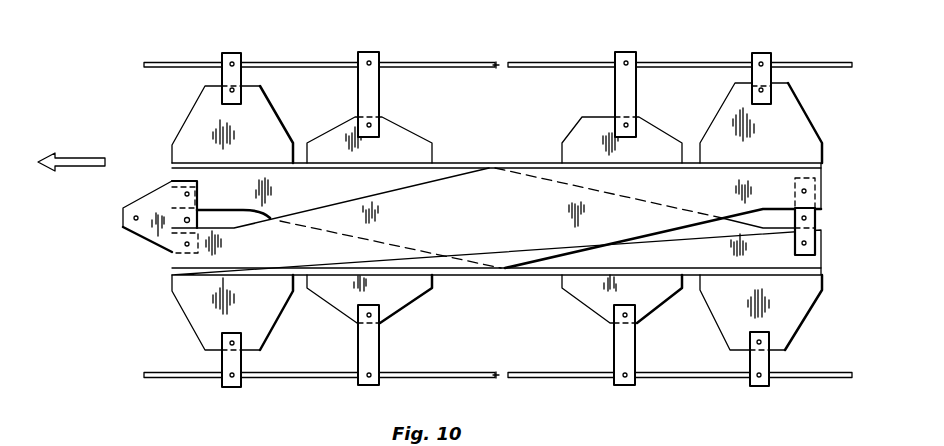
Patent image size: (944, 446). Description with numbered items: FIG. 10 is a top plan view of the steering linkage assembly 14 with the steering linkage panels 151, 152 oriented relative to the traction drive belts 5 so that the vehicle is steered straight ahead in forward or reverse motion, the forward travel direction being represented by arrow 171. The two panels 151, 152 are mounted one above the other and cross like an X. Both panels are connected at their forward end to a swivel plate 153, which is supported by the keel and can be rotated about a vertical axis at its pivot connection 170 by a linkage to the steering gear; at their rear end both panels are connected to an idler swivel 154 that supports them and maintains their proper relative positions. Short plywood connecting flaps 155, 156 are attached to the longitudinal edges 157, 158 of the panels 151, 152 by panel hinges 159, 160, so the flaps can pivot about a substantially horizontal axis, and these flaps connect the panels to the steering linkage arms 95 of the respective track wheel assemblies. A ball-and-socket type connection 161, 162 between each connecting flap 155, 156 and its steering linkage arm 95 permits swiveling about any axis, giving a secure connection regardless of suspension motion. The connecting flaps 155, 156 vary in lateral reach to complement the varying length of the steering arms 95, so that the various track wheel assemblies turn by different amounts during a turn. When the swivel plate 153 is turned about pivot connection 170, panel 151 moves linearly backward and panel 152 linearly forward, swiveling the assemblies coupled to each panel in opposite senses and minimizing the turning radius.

The traction drive belt 5 is at (461, 62).
The carriage assembly 14 is at (157, 104).
The steering linkage arm 95 is at (247, 72).
The steering linkage panel 151 is at (172, 167).
The steering linkage panel 152 is at (172, 262).
The swivel plate 153 is at (137, 202).
The idler swivel 154 is at (817, 218).
The connecting flap 155 is at (184, 120).
The connecting flap 156 is at (180, 310).
The longitudinal edge 157 is at (448, 165).
The longitudinal edge 158 is at (453, 273).
The panel hinge 159 is at (360, 168).
The panel hinge 160 is at (352, 270).
The ball-and-socket type connection 161 is at (230, 88).
The ball-and-socket type connection 162 is at (234, 343).
The pivot connection 170 is at (190, 220).
The arrow 171 is at (77, 157).